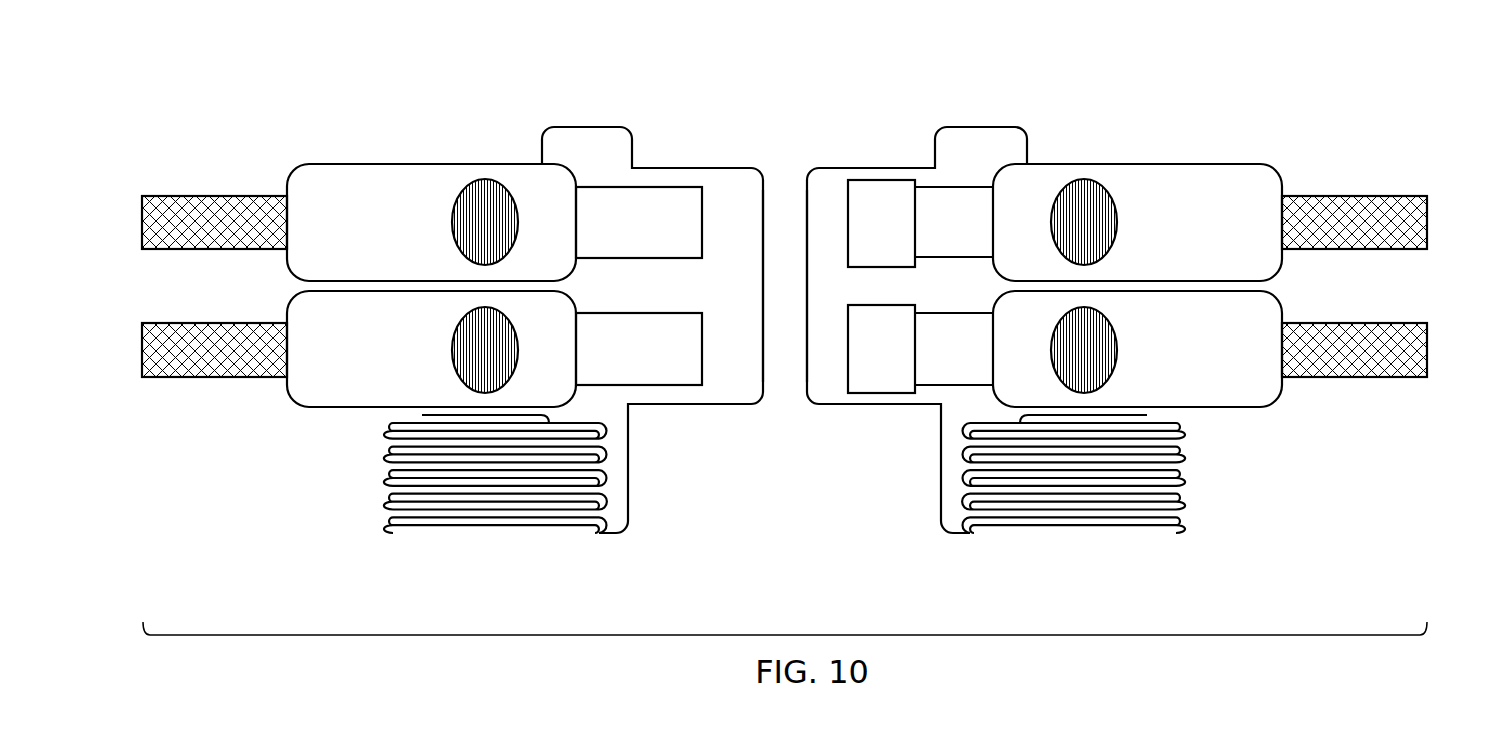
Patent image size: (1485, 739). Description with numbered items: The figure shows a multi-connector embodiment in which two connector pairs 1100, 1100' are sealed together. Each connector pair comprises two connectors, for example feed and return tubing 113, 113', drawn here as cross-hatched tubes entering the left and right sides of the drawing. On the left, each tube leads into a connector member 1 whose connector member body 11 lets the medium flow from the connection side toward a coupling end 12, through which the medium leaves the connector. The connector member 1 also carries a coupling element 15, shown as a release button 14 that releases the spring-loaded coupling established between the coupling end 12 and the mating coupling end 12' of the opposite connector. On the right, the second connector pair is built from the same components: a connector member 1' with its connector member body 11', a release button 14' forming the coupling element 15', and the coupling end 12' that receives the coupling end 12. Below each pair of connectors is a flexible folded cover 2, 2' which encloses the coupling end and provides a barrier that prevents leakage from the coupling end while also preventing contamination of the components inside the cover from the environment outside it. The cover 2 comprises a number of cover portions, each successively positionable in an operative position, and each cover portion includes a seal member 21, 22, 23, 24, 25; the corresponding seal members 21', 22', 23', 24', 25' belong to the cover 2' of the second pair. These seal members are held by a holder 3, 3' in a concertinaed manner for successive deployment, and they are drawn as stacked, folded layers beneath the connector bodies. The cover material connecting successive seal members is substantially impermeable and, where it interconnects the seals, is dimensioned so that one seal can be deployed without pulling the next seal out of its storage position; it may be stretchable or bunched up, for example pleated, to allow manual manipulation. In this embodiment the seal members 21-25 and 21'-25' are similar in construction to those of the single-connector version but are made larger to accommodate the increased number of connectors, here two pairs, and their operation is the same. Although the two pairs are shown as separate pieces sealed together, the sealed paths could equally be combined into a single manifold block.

The connector pair 1100 is at (461, 335).
The connector member 1 is at (418, 281).
The connector member body 11 is at (431, 194).
The release button 14 is at (480, 250).
The coupling end 12 is at (654, 283).
The coupling element 15 is at (738, 283).
The feed and return tubing 113 is at (214, 260).
The flexible folded cover 2 is at (592, 362).
The holder 3 is at (461, 515).
The seal member 21 is at (461, 550).
The seal member 22 is at (461, 521).
The seal member 23 is at (461, 491).
The seal member 24 is at (461, 462).
The seal member 25 is at (461, 430).
The connector pair 1100' is at (1114, 335).
The connector member 1' is at (1161, 268).
The connector member body 11' is at (1137, 194).
The release button 14' is at (1079, 250).
The coupling end 12' is at (920, 320).
The coupling element 15' is at (830, 283).
The feed and return tubing 113' is at (1354, 260).
The flexible folded cover 2' is at (977, 357).
The holder 3' is at (1109, 515).
The seal member 21' is at (1110, 550).
The seal member 22' is at (1109, 521).
The seal member 23' is at (1110, 491).
The seal member 24' is at (1110, 462).
The seal member 25' is at (1110, 430).